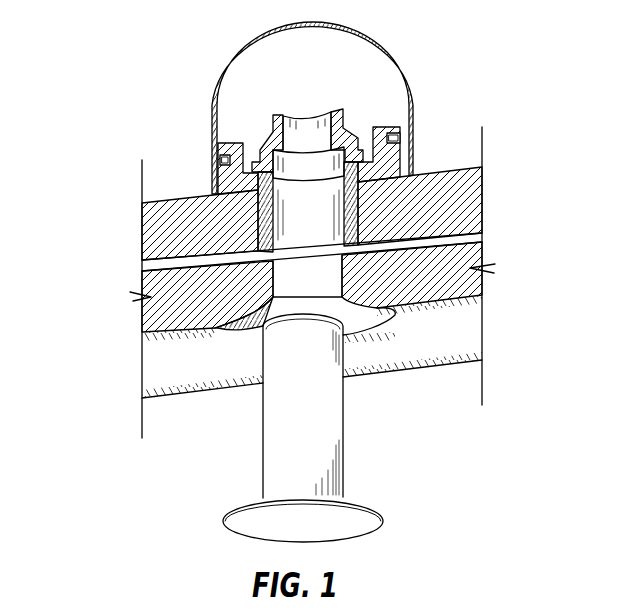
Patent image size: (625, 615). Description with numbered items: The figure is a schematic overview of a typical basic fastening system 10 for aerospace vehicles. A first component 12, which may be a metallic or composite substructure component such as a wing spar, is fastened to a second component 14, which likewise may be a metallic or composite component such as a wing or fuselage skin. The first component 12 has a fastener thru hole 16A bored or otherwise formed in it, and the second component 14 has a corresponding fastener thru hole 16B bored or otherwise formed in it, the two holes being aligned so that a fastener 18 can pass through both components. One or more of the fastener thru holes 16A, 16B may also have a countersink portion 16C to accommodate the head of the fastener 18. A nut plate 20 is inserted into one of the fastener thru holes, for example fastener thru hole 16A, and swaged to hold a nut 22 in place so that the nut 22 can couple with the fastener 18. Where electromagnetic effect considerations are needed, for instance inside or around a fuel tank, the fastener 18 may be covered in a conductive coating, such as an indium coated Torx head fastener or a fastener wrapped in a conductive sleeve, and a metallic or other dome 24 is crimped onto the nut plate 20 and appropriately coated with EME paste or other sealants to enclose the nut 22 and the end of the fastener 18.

The fastening system 10 is at (124, 48).
The first component 12 is at (470, 200).
The second component 14 is at (470, 256).
The fastener thru hole 16A is at (248, 222).
The fastener thru hole 16B is at (284, 270).
The countersink portion 16C is at (250, 321).
The fastener 18 is at (332, 443).
The nut plate 20 is at (390, 160).
The nut 22 is at (302, 128).
The dome 24 is at (412, 88).